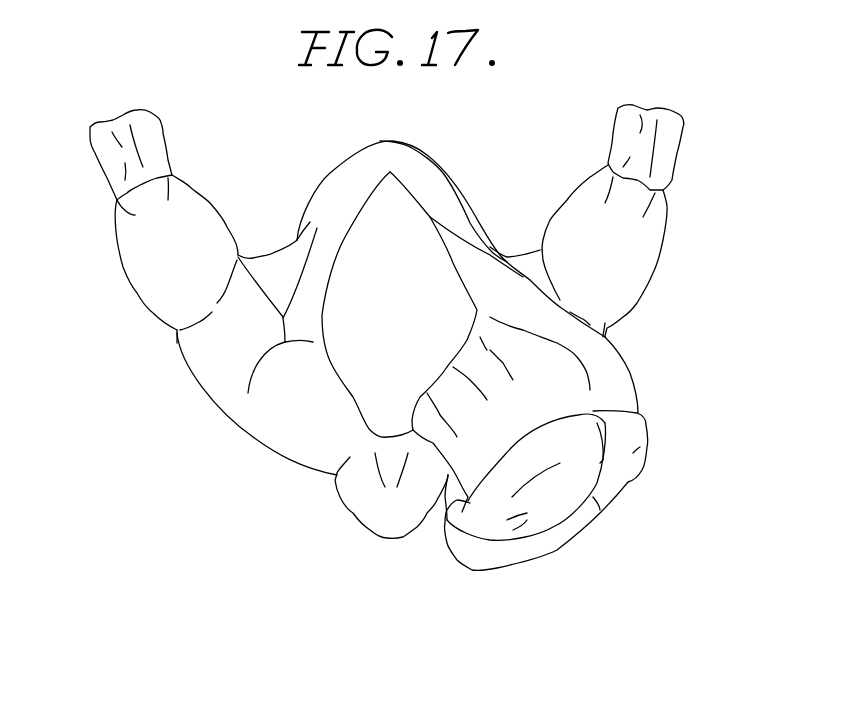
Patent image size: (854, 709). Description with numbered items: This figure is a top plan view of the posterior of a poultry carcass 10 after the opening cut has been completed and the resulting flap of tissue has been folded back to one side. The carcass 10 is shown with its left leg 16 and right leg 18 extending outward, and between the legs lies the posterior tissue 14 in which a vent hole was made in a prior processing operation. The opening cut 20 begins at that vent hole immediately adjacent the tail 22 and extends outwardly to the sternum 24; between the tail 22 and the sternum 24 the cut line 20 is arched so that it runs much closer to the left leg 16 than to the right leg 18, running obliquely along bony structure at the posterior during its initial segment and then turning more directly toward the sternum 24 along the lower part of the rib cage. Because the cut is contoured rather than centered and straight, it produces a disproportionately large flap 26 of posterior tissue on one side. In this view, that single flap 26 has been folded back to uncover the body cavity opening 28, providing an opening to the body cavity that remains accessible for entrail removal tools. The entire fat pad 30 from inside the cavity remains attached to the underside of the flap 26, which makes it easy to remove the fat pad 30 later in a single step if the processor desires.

The carcass 10 is at (498, 179).
The posterior tissue 14 is at (335, 412).
The left leg 16 is at (147, 267).
The right leg 18 is at (643, 250).
The opening cut 20 is at (358, 272).
The tail 22 is at (400, 523).
The sternum 24 is at (392, 140).
The flap 26 is at (613, 372).
The body cavity opening 28 is at (375, 215).
The fat pad 30 is at (620, 480).